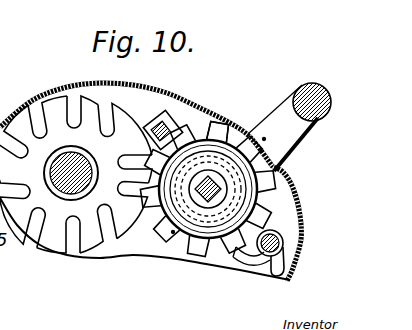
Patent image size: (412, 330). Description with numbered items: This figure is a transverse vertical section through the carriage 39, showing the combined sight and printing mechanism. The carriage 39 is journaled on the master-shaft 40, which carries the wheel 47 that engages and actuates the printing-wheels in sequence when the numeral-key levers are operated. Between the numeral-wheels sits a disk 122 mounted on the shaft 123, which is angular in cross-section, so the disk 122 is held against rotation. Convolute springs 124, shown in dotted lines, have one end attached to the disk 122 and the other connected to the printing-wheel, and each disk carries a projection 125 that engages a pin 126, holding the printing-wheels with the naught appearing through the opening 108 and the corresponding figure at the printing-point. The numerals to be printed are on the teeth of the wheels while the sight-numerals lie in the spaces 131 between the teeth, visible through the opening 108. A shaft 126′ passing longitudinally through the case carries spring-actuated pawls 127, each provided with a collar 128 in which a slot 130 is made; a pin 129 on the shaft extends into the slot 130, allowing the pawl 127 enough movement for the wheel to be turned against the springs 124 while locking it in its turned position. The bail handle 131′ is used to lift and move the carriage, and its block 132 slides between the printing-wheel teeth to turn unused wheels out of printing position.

The carriage 39 is at (143, 91).
The master-shaft 40 is at (71, 163).
The wheel 47 is at (63, 207).
The opening 108 is at (247, 135).
The disk 122 is at (225, 131).
The shaft 123 is at (221, 188).
The convolute springs 124 is at (240, 204).
The projection 125 is at (141, 140).
The pin 126 is at (197, 133).
The shaft 126′ is at (272, 258).
The spring-actuated pawls 127 is at (248, 256).
The collar 128 is at (279, 236).
The pin 129 is at (262, 233).
The slot 130 is at (291, 151).
The spaces 131 is at (264, 138).
The handle 131′ is at (319, 94).
The block 132 is at (202, 140).